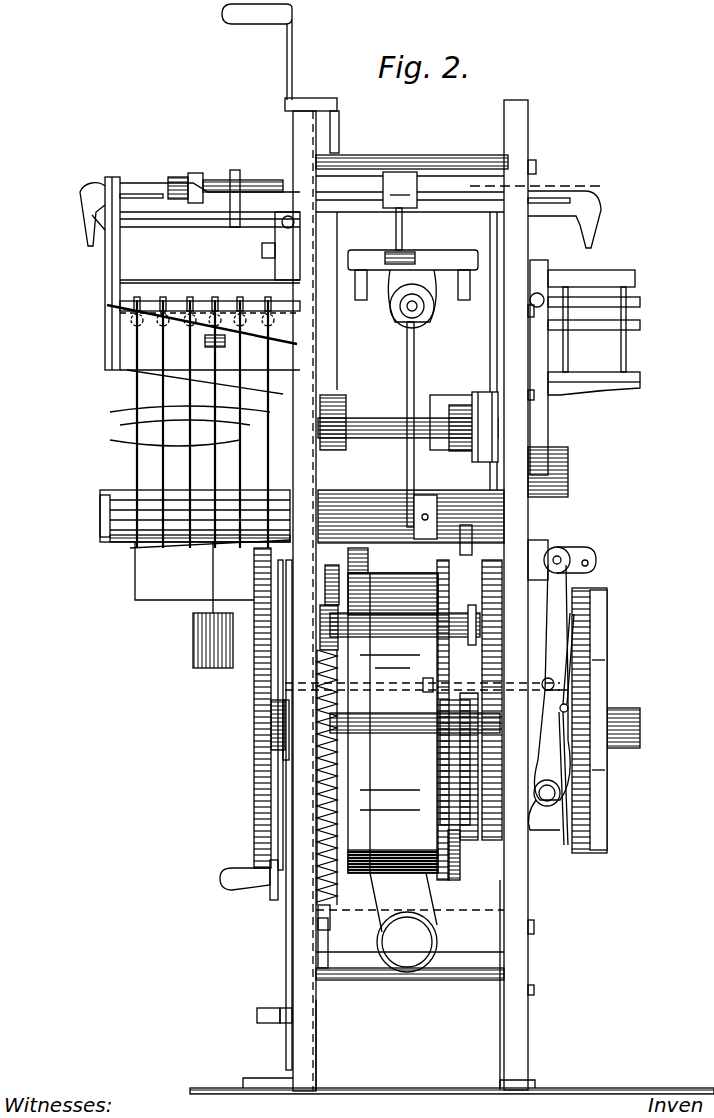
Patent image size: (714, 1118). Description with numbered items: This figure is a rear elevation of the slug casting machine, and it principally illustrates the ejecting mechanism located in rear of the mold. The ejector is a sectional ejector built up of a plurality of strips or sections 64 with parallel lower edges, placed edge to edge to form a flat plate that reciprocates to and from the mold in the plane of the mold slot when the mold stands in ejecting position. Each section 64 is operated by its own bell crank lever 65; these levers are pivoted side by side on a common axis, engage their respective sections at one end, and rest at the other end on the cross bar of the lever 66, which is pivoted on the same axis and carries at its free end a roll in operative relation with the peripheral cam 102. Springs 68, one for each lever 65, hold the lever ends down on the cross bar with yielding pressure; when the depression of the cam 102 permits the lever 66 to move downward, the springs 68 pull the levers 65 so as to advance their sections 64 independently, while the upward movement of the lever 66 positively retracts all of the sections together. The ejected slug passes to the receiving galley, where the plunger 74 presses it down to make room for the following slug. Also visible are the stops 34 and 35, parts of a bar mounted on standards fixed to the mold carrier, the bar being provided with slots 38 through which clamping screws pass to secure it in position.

The stop 34 is at (82, 221).
The stop 35 is at (600, 226).
The slot 38 is at (146, 196).
The ejector section 64 is at (112, 306).
The bell crank lever 65 is at (140, 426).
The lever 66 is at (118, 538).
The spring 68 is at (131, 322).
The plunger 74 is at (200, 639).
The peripheral cam 102 is at (262, 704).